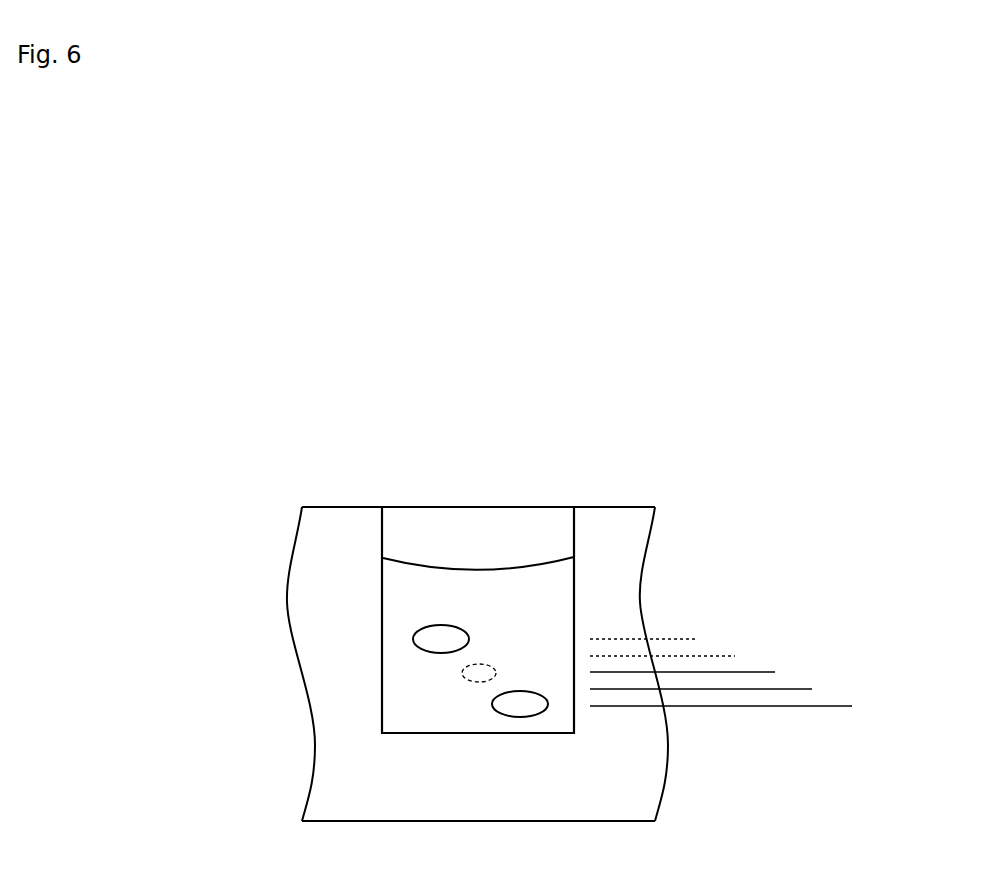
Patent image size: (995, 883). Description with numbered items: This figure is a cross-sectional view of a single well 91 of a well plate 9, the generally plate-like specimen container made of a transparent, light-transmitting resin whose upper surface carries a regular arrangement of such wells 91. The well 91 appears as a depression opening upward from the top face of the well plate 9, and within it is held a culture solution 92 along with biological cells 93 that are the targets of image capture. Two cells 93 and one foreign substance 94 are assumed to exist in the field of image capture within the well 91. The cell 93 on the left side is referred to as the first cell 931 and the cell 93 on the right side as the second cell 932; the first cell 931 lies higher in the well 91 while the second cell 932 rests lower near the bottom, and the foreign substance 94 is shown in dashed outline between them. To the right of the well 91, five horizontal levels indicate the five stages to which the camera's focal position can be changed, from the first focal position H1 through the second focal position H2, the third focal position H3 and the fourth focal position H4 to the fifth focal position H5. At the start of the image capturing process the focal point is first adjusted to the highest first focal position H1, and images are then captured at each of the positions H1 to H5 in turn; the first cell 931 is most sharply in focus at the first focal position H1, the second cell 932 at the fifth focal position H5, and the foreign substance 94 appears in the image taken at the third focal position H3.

The well plate 9 is at (613, 535).
The well 91 is at (425, 543).
The culture solution 92 is at (403, 603).
The biological cell 93 is at (382, 754).
The first cell 931 is at (432, 639).
The second cell 932 is at (519, 704).
The foreign substance 94 is at (471, 681).
The first focal position H1 is at (738, 707).
The second focal position H2 is at (717, 691).
The third focal position H3 is at (699, 674).
The fourth focal position H4 is at (680, 657).
The fifth focal position H5 is at (661, 641).